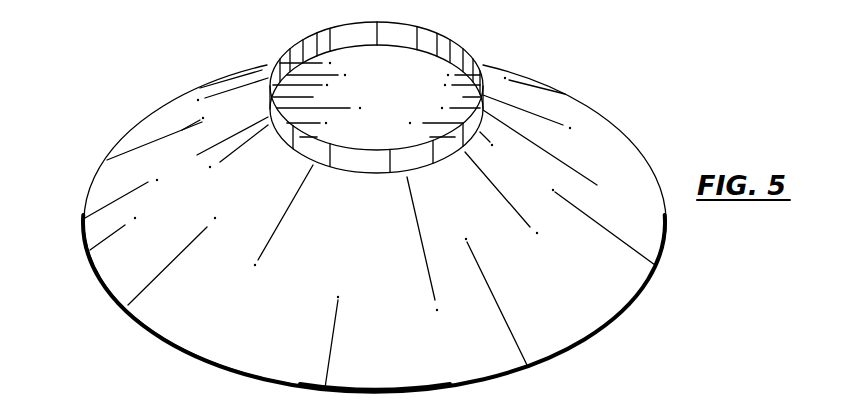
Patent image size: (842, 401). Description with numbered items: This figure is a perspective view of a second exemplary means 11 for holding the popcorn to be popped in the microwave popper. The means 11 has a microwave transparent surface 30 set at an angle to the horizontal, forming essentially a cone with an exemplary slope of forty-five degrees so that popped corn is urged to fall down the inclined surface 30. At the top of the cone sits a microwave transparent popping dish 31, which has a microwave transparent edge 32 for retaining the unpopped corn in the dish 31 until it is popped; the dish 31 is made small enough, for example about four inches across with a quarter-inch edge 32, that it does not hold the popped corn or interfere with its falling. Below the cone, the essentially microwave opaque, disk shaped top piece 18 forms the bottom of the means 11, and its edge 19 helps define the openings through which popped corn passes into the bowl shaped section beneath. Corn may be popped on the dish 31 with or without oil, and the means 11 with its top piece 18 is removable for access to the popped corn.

The means for holding the popcorn to be popped 11 is at (99, 121).
The top piece 18 is at (656, 263).
The edge of the top piece 19 is at (553, 363).
The microwave transparent surface 30 is at (588, 148).
The popping dish 31 is at (407, 78).
The edge of the popping dish 32 is at (318, 40).